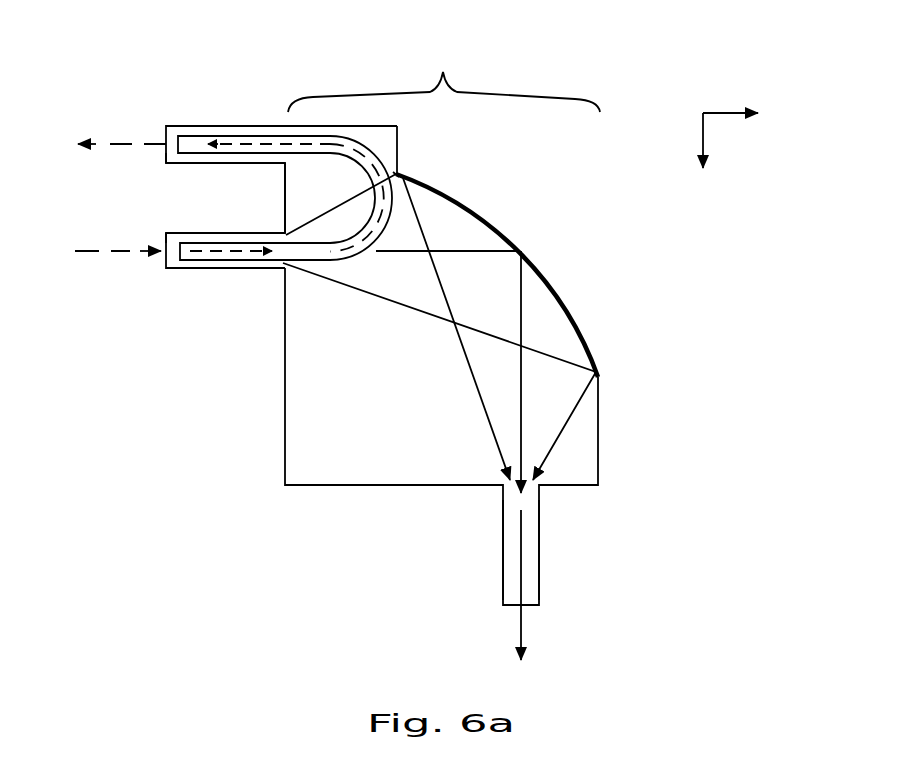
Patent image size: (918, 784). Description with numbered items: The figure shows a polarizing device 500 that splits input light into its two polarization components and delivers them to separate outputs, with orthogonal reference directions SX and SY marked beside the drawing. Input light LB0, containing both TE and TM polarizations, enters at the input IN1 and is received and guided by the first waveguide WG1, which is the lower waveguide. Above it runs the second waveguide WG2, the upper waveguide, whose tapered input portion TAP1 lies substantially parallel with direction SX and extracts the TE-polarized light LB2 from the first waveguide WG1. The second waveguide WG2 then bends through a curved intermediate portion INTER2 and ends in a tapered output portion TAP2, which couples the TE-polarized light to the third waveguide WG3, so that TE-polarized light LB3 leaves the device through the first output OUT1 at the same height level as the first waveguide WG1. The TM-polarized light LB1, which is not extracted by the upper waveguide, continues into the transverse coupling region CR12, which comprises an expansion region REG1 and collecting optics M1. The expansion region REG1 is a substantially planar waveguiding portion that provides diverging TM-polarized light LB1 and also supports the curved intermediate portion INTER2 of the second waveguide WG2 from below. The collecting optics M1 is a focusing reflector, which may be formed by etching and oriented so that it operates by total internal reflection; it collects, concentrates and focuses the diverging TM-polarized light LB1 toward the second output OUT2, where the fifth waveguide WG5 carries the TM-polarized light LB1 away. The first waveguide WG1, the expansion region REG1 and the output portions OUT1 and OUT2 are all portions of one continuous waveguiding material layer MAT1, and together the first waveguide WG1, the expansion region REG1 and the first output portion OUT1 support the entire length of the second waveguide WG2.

The polarizing device 500 is at (233, 40).
The waveguiding material layer MAT1 is at (347, 197).
The expansion region REG1 is at (348, 224).
The third waveguide WG3 is at (188, 126).
The first waveguide WG1 is at (190, 268).
The second waveguide WG2 is at (353, 127).
The tapered output portion TAP2 is at (257, 136).
The tapered input portion TAP1 is at (263, 260).
The TE-polarized light LB2 is at (323, 140).
The TE-polarized light in the third waveguide LB3 is at (113, 144).
The first output portion OUT1 is at (166, 158).
The input light LB0 is at (105, 252).
The input waveguiding portion IN1 is at (165, 241).
The transverse coupling region CR12 is at (444, 76).
The curved intermediate portion INTER2 is at (396, 172).
The collecting optics M1 is at (558, 293).
The TM-polarized light LB1 is at (410, 253).
The fifth waveguide WG5 is at (540, 550).
The second output portion OUT2 is at (540, 578).
The direction SX is at (751, 117).
The direction SY is at (700, 159).